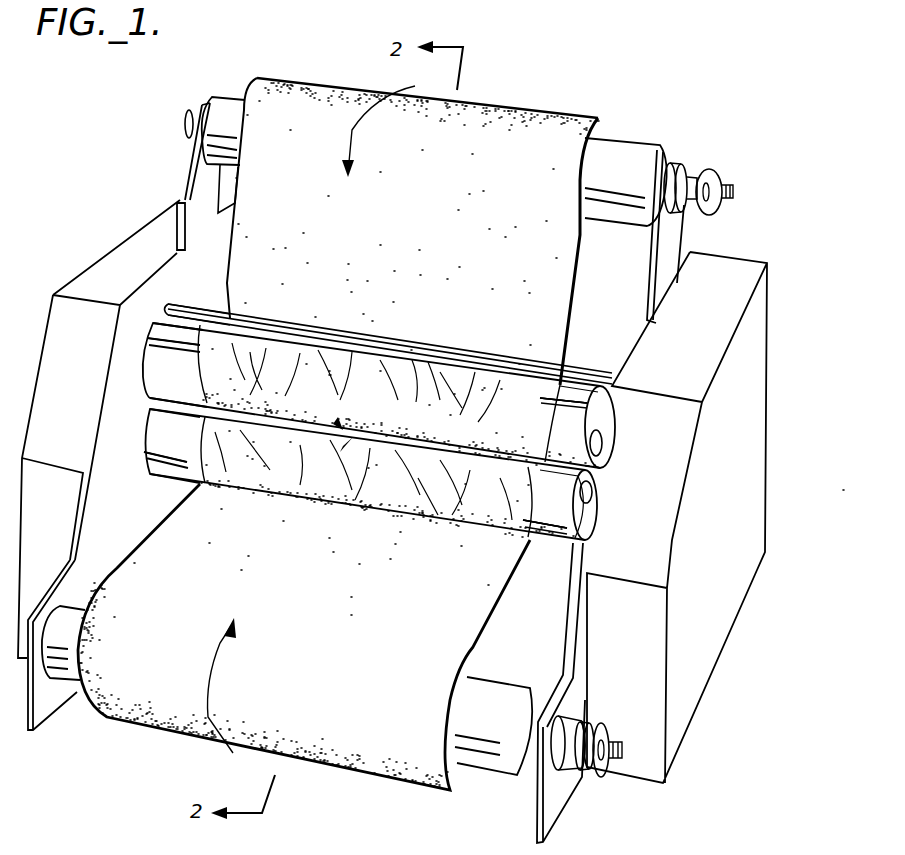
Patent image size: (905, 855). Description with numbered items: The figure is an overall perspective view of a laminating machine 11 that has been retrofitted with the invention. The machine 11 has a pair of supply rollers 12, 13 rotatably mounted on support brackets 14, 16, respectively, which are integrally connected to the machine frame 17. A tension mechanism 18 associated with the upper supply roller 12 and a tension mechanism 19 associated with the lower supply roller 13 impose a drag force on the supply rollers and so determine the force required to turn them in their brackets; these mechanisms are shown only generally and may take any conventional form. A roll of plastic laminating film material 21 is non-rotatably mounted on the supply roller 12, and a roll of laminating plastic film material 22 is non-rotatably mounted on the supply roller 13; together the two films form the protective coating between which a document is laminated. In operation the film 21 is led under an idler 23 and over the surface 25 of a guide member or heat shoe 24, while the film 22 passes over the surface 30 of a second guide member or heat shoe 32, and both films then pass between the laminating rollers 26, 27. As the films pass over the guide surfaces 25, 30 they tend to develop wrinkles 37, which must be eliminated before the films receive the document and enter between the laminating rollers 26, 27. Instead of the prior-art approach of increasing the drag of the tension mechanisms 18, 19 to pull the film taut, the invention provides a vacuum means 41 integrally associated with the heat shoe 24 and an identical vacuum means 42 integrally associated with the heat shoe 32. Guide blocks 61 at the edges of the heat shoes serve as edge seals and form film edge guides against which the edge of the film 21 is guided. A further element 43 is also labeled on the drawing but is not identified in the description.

The laminating machine 11 is at (128, 190).
The supply roller 12 is at (608, 139).
The supply roller 13 is at (487, 770).
The support bracket 14 is at (187, 173).
The support bracket 16 is at (31, 696).
The machine frame 17 is at (121, 531).
The tension mechanism 18 is at (718, 155).
The tension mechanism 19 is at (592, 790).
The roll of plastic laminating film material 21 is at (543, 113).
The roll of laminating plastic film material 22 is at (372, 770).
The idler 23 is at (583, 367).
The guide member (heat shoe) 24 is at (583, 413).
The surface 25 is at (569, 442).
The laminating roller 26 is at (603, 434).
The laminating roller 27 is at (594, 482).
The surface 30 is at (561, 499).
The guide member (heat shoe) 32 is at (567, 507).
The wrinkles 37 is at (443, 385).
The vacuum means 41 is at (563, 385).
The vacuum means 42 is at (566, 543).
The pivot rod 43 is at (165, 330).
The guide block 61 is at (195, 347).